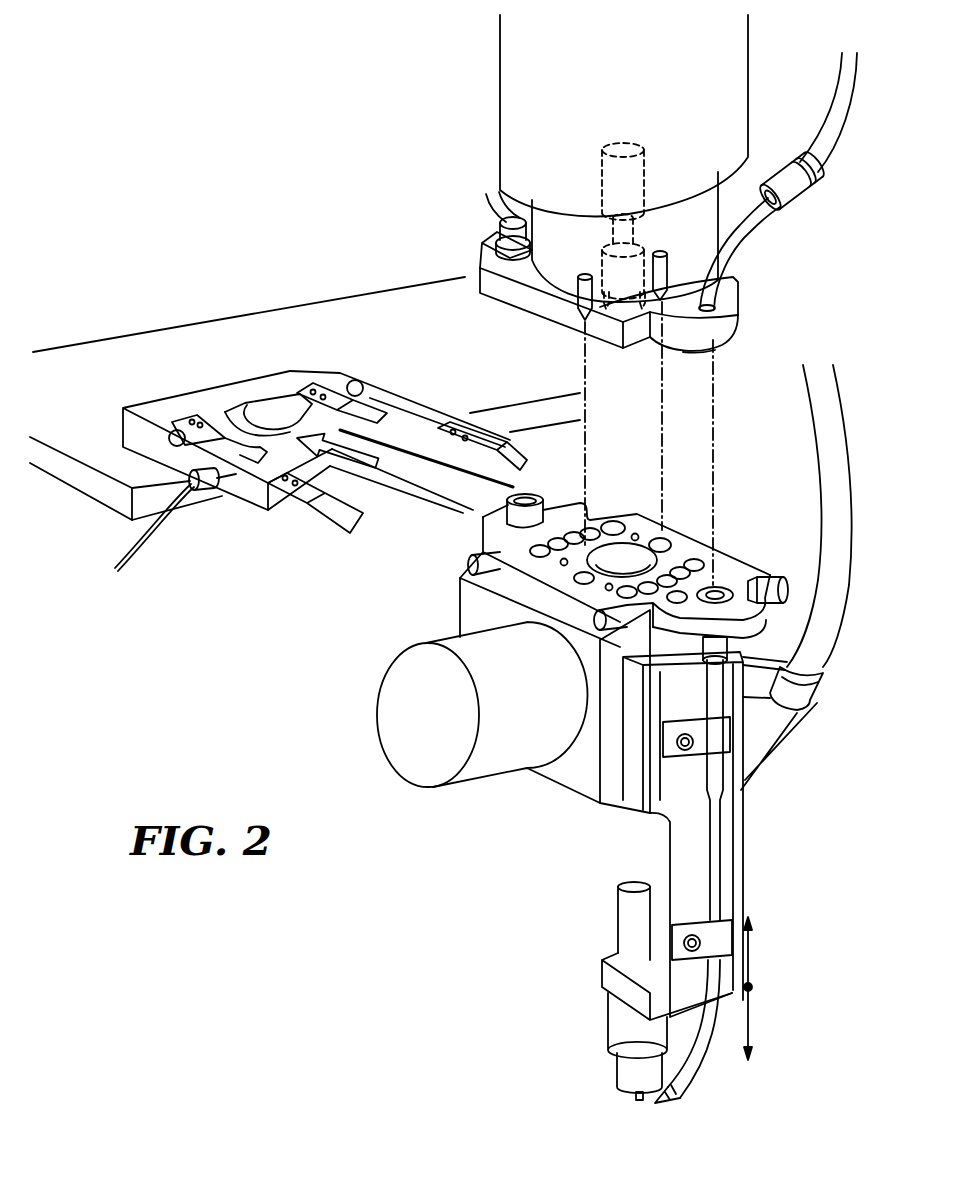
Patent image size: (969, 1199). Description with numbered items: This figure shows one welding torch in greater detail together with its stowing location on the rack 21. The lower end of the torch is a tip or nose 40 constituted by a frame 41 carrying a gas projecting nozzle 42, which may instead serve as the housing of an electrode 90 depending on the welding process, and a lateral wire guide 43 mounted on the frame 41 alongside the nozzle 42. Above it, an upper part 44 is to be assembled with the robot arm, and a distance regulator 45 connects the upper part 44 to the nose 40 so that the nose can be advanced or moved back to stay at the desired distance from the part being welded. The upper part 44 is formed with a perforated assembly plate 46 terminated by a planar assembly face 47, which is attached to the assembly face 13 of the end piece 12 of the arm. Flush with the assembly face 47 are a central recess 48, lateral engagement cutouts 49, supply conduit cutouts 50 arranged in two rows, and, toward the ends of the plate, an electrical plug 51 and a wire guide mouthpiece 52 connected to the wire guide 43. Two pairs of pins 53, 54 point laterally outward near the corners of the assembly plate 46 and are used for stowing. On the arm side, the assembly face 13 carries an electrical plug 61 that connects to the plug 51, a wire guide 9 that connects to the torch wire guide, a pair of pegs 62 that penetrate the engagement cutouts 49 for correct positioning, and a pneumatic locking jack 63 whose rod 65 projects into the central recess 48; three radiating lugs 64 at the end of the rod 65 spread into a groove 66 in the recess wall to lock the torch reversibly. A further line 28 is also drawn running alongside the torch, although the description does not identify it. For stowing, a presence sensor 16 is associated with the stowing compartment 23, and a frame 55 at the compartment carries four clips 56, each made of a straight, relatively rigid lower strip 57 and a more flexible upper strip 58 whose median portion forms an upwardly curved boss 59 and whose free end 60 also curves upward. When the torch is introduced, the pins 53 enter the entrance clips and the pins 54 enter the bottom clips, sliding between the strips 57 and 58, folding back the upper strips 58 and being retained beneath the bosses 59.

The wire guide 9 is at (758, 221).
The end piece 12 is at (740, 320).
The assembly face 13 is at (712, 350).
The presence sensor 16 is at (132, 553).
The rack 21 is at (97, 523).
The stowing compartment 23 is at (247, 417).
The cable 28 is at (836, 413).
The tip or nose 40 is at (745, 825).
The frame 41 is at (728, 863).
The gas projecting nozzle 42 is at (620, 1050).
The lateral wire guide 43 is at (697, 1068).
The upper part 44 is at (787, 527).
The distance regulator 45 is at (405, 760).
The assembly plate 46 is at (581, 505).
The planar assembly face 47 is at (470, 621).
The central recess 48 is at (617, 540).
The lateral engagement cutouts 49 is at (678, 538).
The supply conduit cutouts 50 is at (538, 558).
The electrical plug 51 is at (541, 497).
The wire guide mouthpiece 52 is at (757, 608).
The pins 53 is at (775, 600).
The pins 54 is at (468, 566).
The frame 55 is at (282, 375).
The clips 56 is at (443, 428).
The lower strip 57 is at (325, 530).
The upper strip 58 is at (352, 460).
The boss 59 is at (460, 490).
The free end 60 is at (609, 300).
The electrical plug 61 is at (494, 225).
The pegs 62 is at (660, 250).
The pneumatic locking jack 63 is at (615, 140).
The lugs 64 is at (608, 290).
The rod 65 is at (600, 230).
The groove 66 is at (672, 542).
The electrode 90 is at (639, 1103).